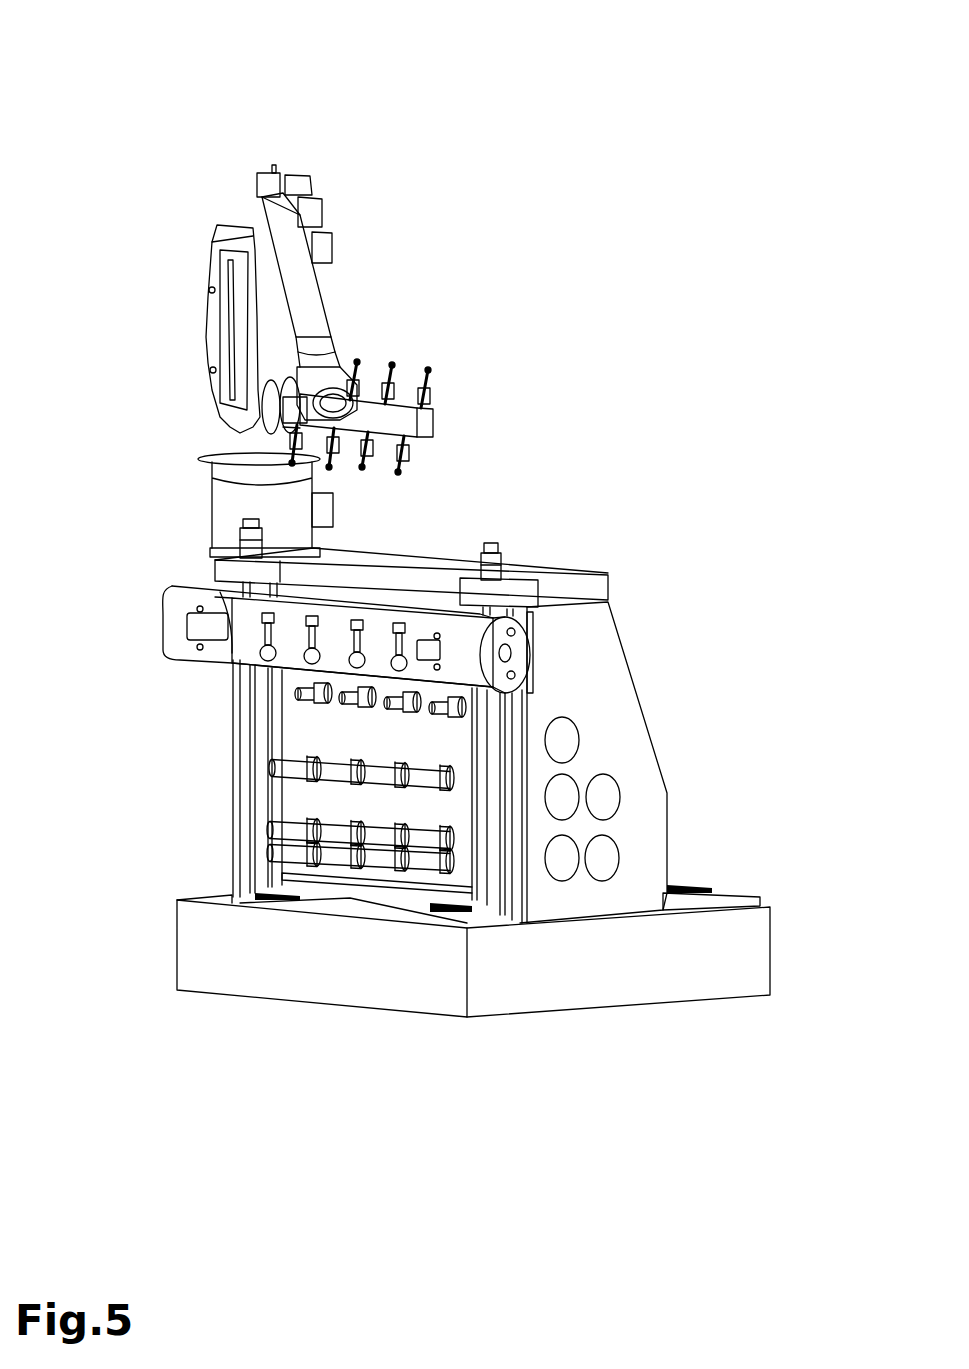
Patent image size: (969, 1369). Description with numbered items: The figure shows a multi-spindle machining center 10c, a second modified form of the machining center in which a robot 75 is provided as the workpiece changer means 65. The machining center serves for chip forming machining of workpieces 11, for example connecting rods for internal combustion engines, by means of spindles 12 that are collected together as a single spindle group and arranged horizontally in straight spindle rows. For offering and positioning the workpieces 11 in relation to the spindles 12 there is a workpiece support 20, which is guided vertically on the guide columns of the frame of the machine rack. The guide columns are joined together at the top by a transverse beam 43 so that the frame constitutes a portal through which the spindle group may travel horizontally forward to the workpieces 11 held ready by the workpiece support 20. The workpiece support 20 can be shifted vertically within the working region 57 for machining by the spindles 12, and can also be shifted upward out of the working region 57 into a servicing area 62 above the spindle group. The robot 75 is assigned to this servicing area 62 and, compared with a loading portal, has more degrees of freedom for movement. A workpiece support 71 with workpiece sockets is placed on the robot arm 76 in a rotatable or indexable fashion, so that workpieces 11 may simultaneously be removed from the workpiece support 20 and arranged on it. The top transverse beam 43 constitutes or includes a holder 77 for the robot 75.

The multi-spindle machining center 10c is at (772, 160).
The workpieces 11 is at (430, 388).
The spindles 12 is at (275, 768).
The workpiece support 20 is at (242, 662).
The transverse beam 43 is at (410, 556).
The working region 57 is at (292, 816).
The servicing area 62 is at (428, 572).
The workpiece changer means 65 is at (344, 226).
The workpiece support 71 is at (440, 418).
The robot 75 is at (220, 234).
The robot arm 76 is at (328, 325).
The holder 77 is at (212, 549).